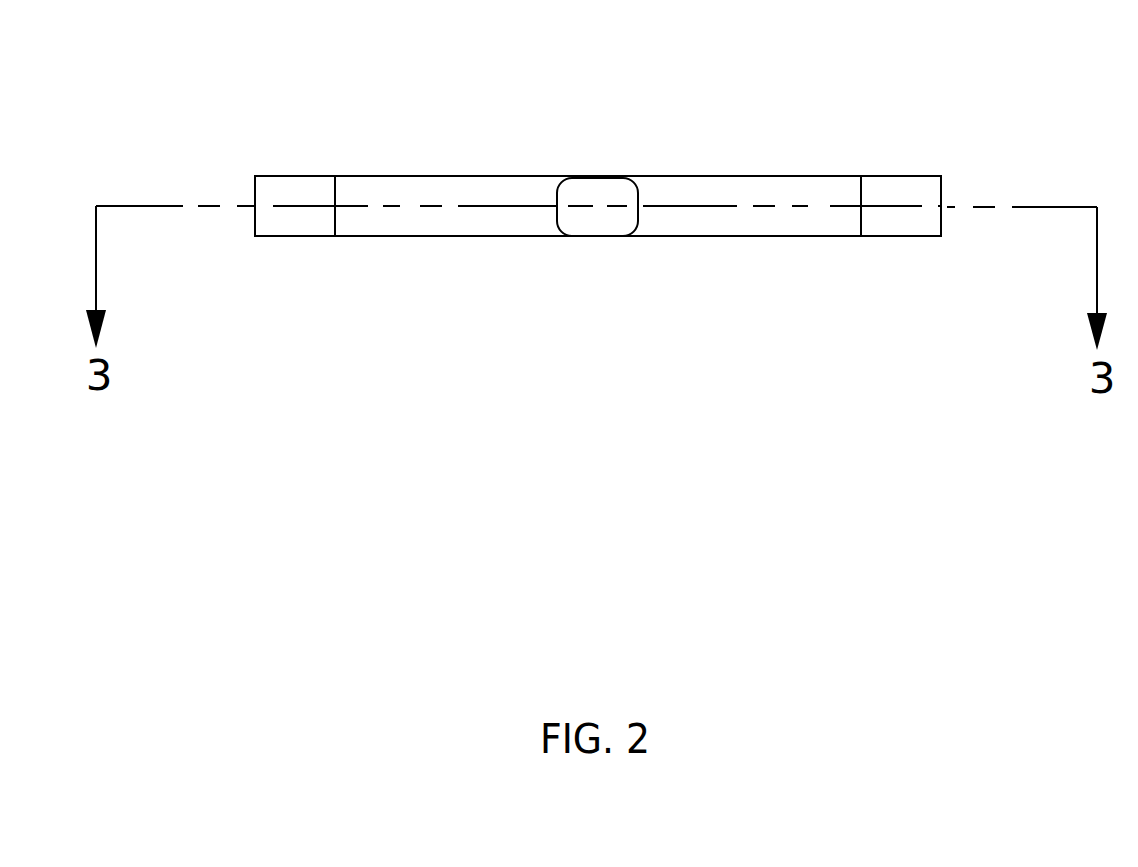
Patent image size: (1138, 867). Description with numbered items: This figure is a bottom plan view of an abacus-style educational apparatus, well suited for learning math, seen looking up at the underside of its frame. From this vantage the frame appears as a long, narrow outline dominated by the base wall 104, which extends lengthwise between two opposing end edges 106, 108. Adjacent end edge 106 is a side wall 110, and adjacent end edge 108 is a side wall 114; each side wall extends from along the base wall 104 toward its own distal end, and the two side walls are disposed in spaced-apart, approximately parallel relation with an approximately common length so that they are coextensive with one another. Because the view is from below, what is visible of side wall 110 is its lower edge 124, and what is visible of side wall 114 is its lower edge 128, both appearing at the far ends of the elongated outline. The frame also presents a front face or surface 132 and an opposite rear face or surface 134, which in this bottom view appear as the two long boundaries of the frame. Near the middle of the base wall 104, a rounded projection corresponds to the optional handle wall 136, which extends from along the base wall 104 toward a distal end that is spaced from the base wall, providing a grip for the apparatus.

The base wall 104 is at (454, 238).
The end edge 106 is at (336, 214).
The end edge 108 is at (861, 207).
The side wall 110 is at (291, 228).
The side wall 114 is at (910, 180).
The lower edge 124 is at (255, 189).
The lower edge 128 is at (941, 192).
The front surface 132 is at (810, 160).
The rear surface 134 is at (763, 256).
The handle wall 136 is at (560, 244).